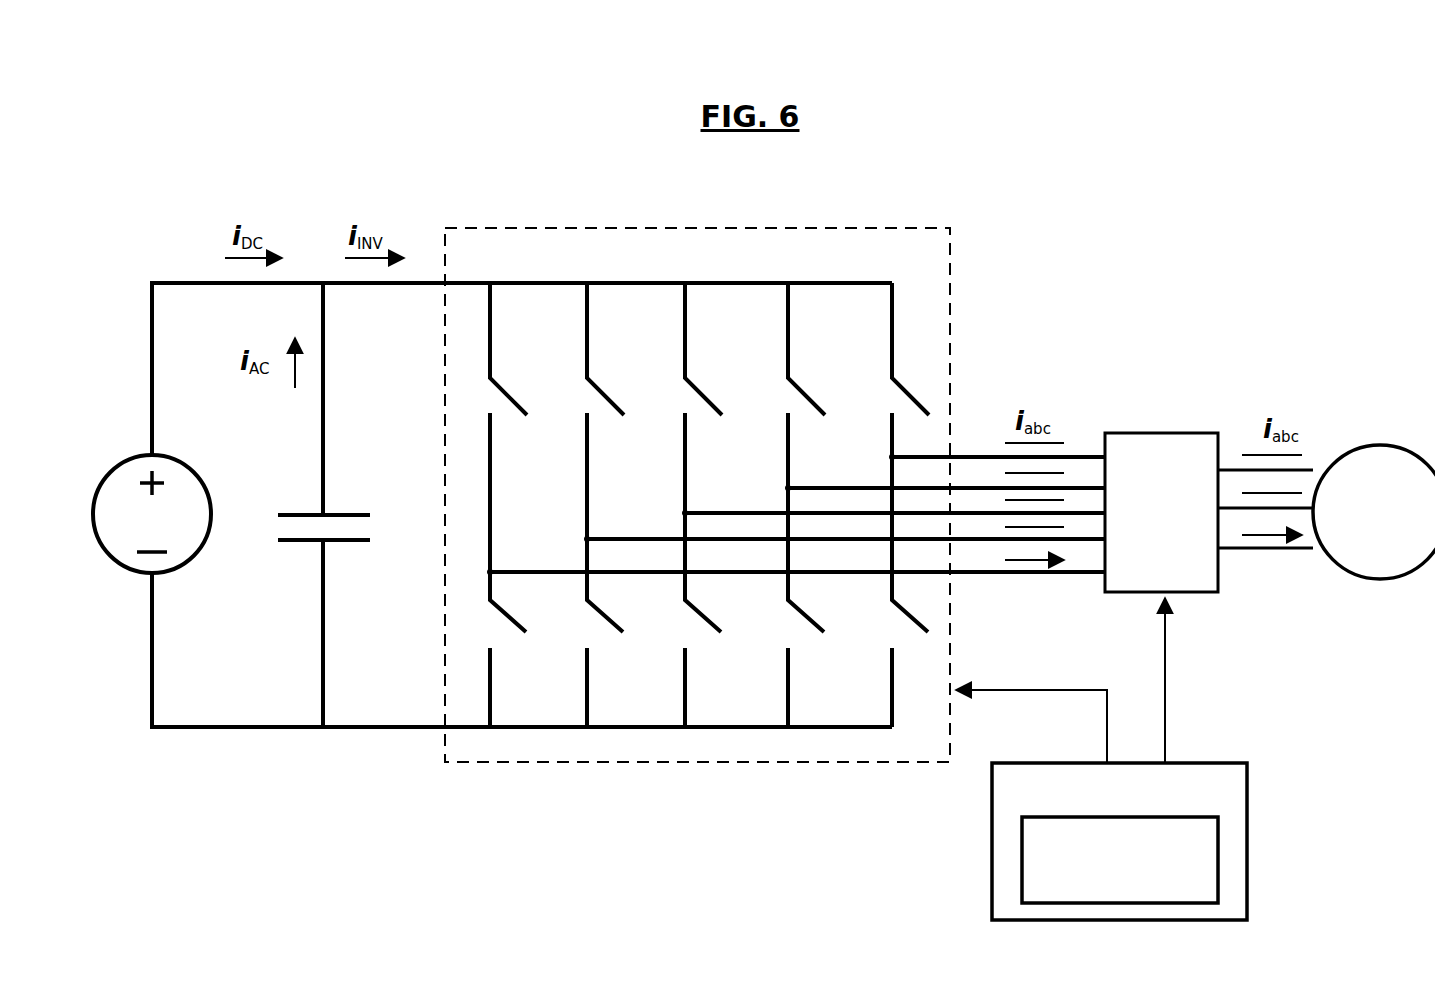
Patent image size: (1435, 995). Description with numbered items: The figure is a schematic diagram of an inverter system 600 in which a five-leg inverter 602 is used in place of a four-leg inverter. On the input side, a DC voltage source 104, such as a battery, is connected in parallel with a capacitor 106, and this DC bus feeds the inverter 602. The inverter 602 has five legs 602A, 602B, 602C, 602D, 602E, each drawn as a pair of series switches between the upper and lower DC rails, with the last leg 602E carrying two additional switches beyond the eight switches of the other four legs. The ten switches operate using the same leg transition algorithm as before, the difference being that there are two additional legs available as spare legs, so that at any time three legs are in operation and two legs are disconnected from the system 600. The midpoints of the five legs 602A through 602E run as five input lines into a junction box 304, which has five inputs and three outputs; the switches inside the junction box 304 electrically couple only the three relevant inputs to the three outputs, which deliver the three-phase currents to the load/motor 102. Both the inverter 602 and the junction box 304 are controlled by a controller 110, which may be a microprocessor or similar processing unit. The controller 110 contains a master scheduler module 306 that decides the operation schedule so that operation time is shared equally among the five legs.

The inverter system 600 is at (749, 504).
The five-leg inverter 602 is at (950, 272).
The first leg 602A is at (497, 742).
The second leg 602B is at (597, 742).
The third leg 602C is at (692, 742).
The fourth leg 602D is at (794, 742).
The fifth leg 602E is at (897, 742).
The DC voltage source 104 is at (167, 508).
The capacitor 106 is at (345, 522).
The junction box 304 is at (1161, 512).
The load/motor 102 is at (1374, 512).
The controller 110 is at (1101, 759).
The master scheduler module 306 is at (1120, 860).